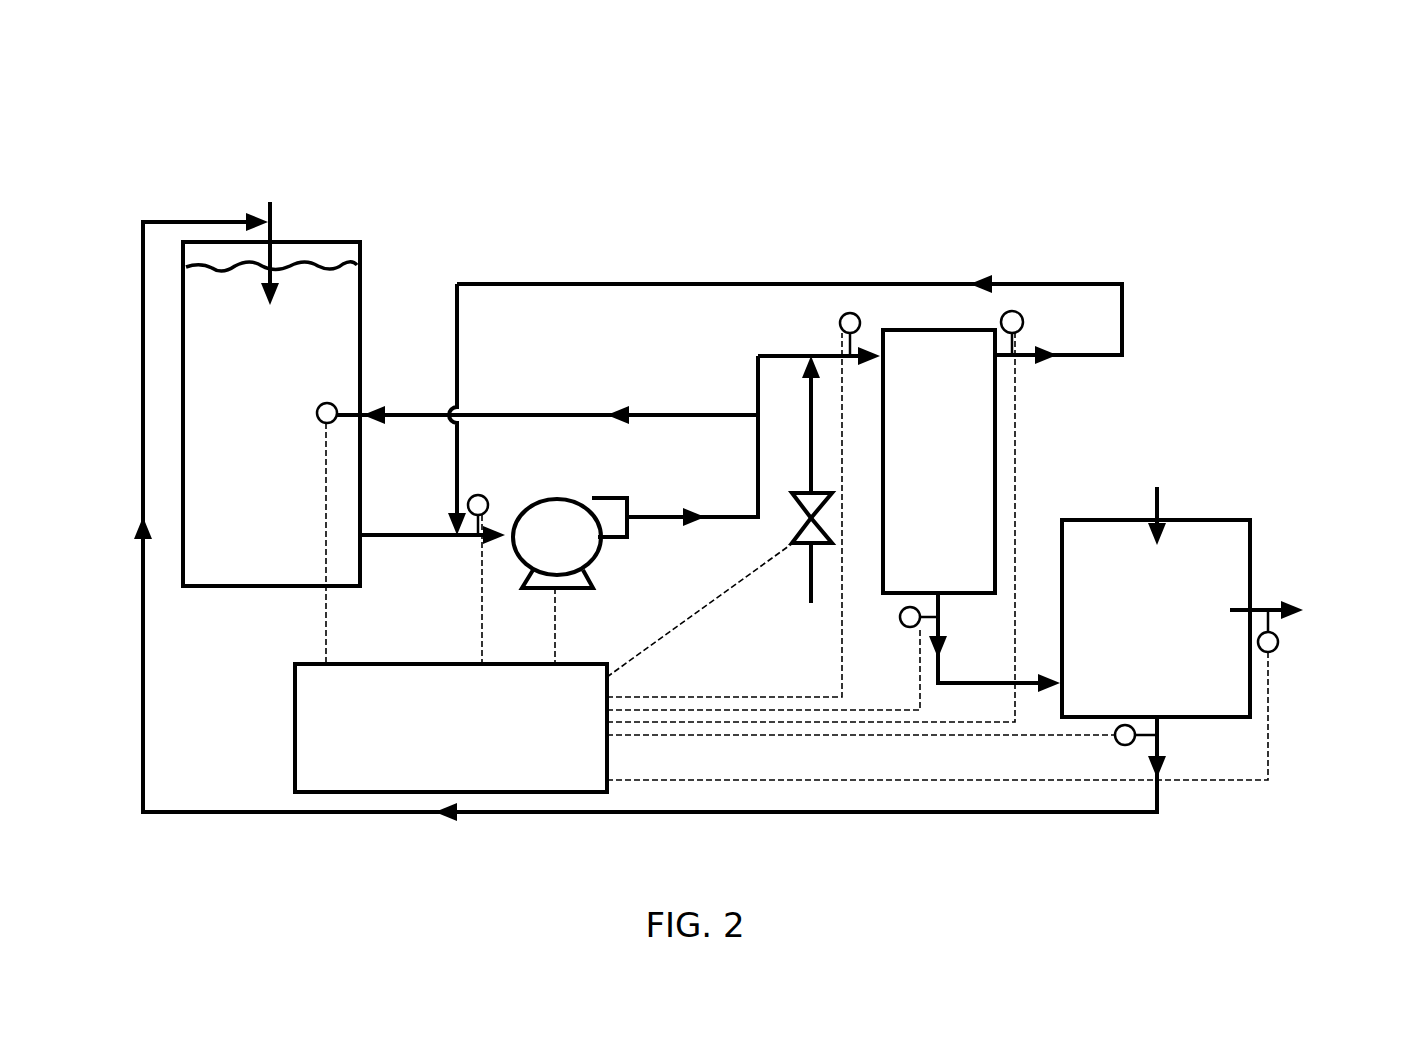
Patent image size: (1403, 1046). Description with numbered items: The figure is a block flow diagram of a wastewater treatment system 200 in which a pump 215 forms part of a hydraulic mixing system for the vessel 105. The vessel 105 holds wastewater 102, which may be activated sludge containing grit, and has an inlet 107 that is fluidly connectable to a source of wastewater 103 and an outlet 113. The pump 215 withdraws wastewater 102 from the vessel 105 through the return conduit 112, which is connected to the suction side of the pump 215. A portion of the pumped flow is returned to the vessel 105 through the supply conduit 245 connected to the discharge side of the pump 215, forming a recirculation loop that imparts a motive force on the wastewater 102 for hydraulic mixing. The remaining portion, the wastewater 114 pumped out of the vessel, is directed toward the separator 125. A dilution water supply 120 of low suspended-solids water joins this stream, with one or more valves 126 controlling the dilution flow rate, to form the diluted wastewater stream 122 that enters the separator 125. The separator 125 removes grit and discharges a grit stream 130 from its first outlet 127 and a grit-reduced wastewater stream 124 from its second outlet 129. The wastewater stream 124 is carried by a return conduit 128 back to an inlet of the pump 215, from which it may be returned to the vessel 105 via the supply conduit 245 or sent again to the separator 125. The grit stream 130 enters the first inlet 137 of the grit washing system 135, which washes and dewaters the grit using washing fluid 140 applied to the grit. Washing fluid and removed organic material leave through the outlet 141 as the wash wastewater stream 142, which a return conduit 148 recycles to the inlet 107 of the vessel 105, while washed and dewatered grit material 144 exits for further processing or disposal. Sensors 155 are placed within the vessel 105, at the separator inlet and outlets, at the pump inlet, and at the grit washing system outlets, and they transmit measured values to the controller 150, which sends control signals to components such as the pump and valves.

The wastewater treatment system 200 is at (230, 118).
The wastewater 102 is at (320, 338).
The source of wastewater 103 is at (269, 235).
The vessel 105 is at (298, 432).
The inlet 107 is at (267, 248).
The return conduit 112 is at (432, 521).
The outlet 113 is at (355, 533).
The wastewater pumped out of the vessel 114 is at (775, 327).
The dilution water supply 120 is at (804, 591).
The diluted wastewater stream 122 is at (828, 355).
The wastewater stream 124 is at (789, 328).
The separator 125 is at (912, 483).
The valve 126 is at (797, 525).
The first outlet 127 is at (940, 587).
The return conduit 128 is at (692, 284).
The second outlet 129 is at (990, 355).
The grit stream 130 is at (998, 669).
The grit washing system 135 is at (1130, 638).
The first inlet 137 is at (1068, 680).
The source of washing fluid 140 is at (1154, 495).
The outlet 141 is at (1160, 707).
The wash wastewater stream 142 is at (678, 512).
The grit material 144 is at (1296, 611).
The return conduit 148 is at (768, 813).
The controller 150 is at (781, 562).
The sensor 155 is at (336, 410).
The pump 215 is at (558, 513).
The supply conduit 245 is at (547, 409).